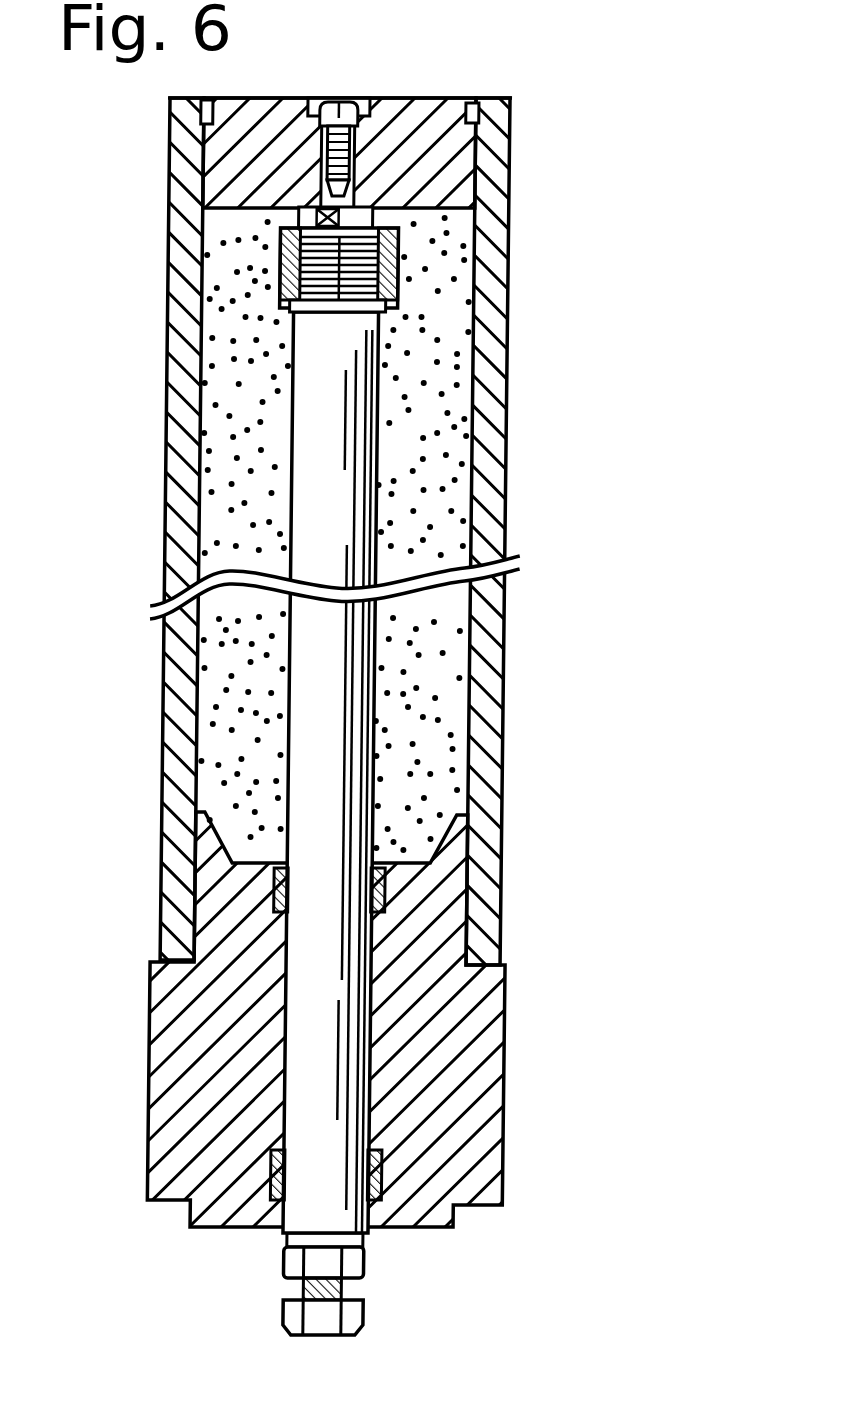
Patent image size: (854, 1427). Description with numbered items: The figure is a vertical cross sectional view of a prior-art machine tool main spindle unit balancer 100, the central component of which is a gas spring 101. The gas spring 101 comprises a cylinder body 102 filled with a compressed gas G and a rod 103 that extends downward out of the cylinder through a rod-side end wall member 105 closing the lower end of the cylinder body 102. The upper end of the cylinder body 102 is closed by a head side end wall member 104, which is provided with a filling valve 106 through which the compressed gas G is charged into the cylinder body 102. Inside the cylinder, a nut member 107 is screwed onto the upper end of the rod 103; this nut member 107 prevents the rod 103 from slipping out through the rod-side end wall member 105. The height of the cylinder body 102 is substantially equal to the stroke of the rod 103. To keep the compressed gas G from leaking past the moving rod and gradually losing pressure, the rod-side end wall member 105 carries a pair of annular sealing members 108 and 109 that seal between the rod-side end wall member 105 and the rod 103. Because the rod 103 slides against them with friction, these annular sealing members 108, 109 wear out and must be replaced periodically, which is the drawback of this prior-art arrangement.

The main spindle unit balancer 100 is at (593, 252).
The gas spring 101 is at (540, 363).
The cylinder body 102 is at (507, 450).
The rod 103 is at (359, 527).
The head side end wall member 104 is at (428, 100).
The rod-side end wall member 105 is at (457, 1180).
The filling valve 106 is at (338, 98).
The nut member 107 is at (280, 278).
The annular sealing member 108 is at (382, 898).
The annular sealing member 109 is at (385, 1182).
The compressed gas G is at (437, 628).